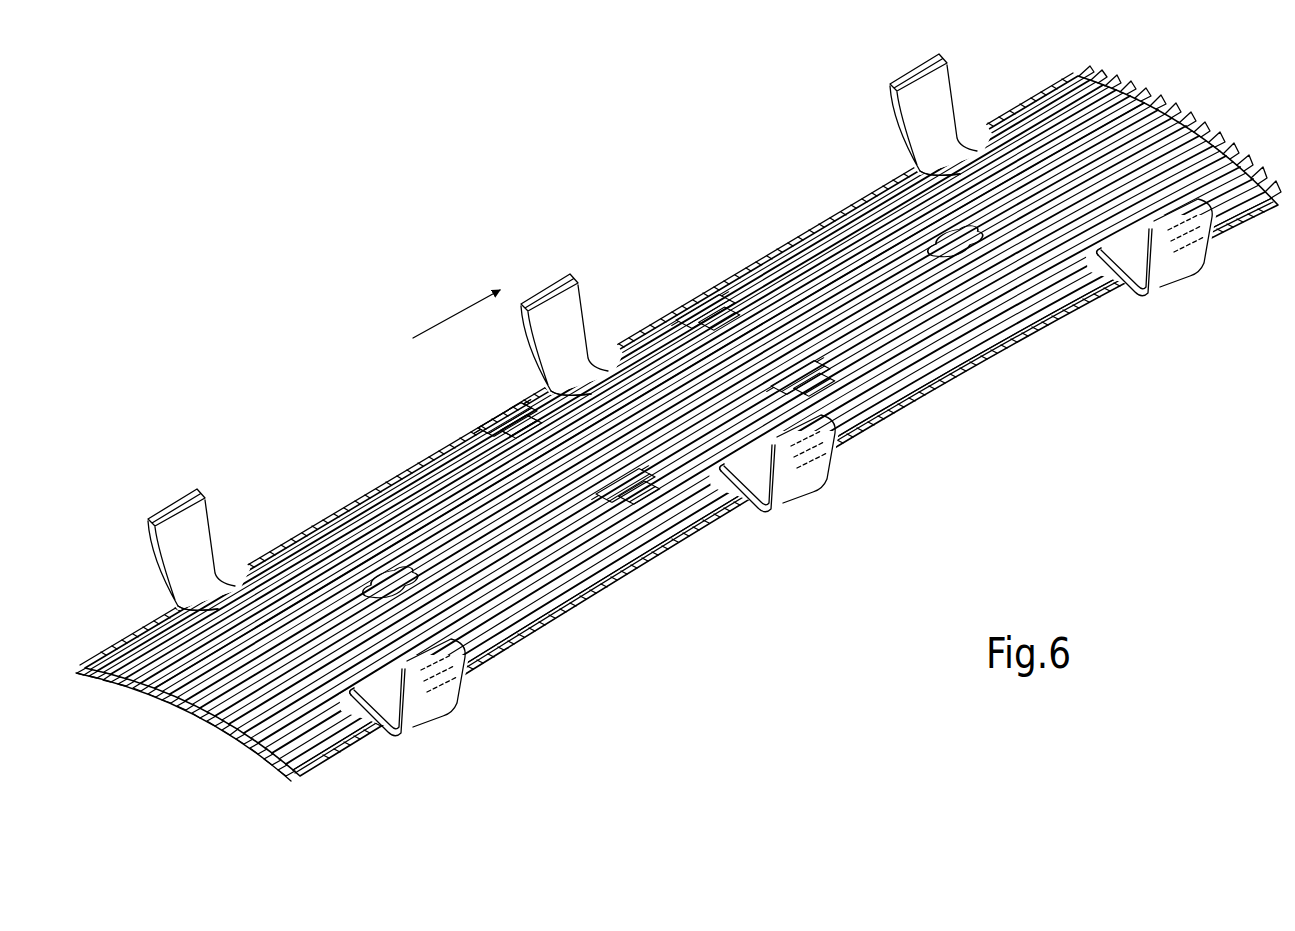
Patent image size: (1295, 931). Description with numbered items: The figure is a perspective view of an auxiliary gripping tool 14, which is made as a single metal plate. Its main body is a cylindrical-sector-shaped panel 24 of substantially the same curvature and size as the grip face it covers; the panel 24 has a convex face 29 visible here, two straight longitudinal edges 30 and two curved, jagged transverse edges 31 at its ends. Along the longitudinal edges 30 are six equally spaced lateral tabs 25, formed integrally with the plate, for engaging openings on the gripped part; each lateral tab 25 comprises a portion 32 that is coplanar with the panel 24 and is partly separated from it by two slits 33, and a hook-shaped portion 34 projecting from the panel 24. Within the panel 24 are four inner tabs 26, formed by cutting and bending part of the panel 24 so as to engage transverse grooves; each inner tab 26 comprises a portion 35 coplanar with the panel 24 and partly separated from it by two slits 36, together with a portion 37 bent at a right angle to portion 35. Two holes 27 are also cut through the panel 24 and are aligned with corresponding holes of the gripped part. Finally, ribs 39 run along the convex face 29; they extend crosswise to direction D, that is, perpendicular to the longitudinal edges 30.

The auxiliary gripping tool 14 is at (585, 210).
The cylindrical-sector-shaped panel 24 is at (975, 348).
The lateral tab 25 is at (895, 127).
The inner tab 26 is at (690, 300).
The hole 27 is at (935, 228).
The convex face 29 is at (382, 440).
The longitudinal edge 30 is at (303, 508).
The transverse edge 31 is at (1190, 105).
The coplanar portion of lateral tab 32 is at (957, 152).
The slit 33 is at (907, 150).
The hook-shaped portion 34 is at (900, 97).
The coplanar portion of inner tab 35 is at (740, 318).
The slit 36 is at (752, 320).
The bent portion 37 is at (692, 320).
The rib 39 is at (772, 268).